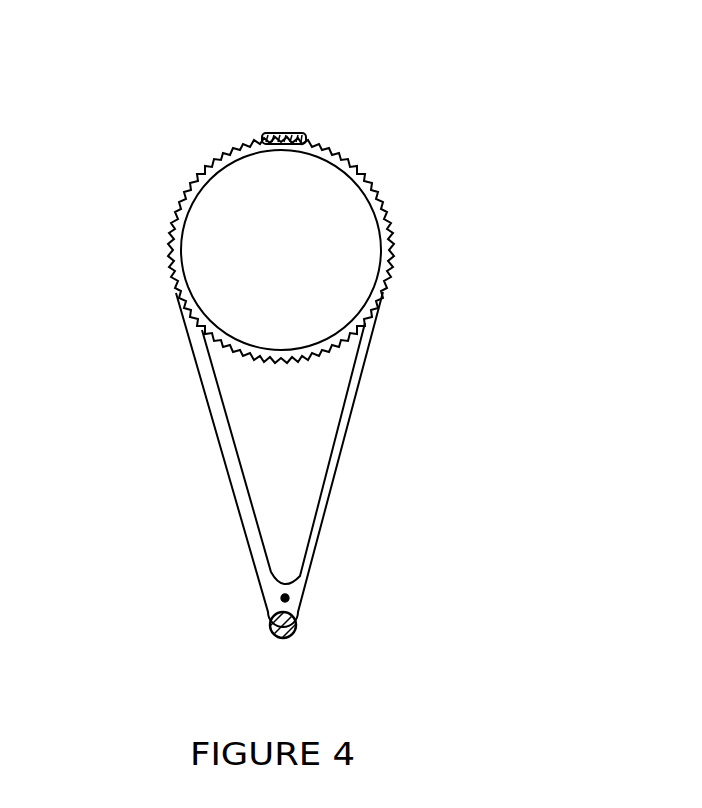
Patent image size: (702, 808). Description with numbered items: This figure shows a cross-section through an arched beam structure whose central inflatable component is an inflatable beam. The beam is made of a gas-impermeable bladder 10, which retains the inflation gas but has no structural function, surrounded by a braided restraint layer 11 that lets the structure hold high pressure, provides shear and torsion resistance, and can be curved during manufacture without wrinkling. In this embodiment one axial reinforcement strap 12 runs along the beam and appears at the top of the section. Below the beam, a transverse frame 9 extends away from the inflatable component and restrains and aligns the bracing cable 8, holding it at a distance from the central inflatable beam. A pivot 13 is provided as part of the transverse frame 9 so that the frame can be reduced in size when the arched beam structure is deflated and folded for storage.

The bracing cable 8 is at (297, 628).
The transverse frames 9 is at (222, 462).
The gas-impermeable bladder 10 is at (380, 245).
The braided restraint layer 11 is at (395, 243).
The axial reinforcement strap 12 is at (285, 134).
The pivots 13 is at (300, 592).